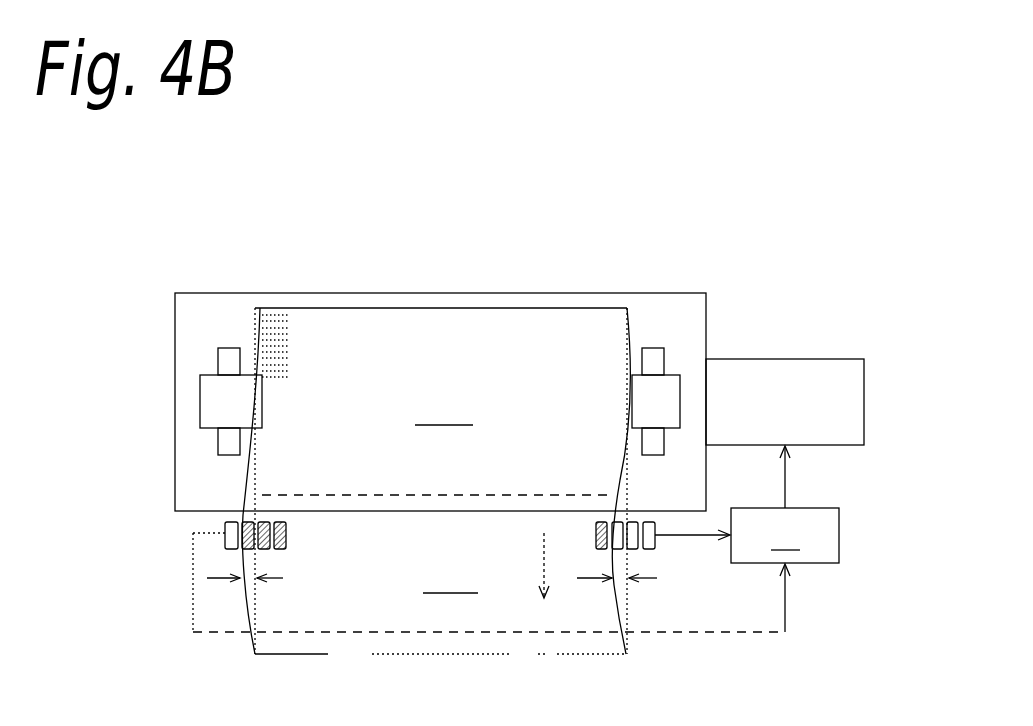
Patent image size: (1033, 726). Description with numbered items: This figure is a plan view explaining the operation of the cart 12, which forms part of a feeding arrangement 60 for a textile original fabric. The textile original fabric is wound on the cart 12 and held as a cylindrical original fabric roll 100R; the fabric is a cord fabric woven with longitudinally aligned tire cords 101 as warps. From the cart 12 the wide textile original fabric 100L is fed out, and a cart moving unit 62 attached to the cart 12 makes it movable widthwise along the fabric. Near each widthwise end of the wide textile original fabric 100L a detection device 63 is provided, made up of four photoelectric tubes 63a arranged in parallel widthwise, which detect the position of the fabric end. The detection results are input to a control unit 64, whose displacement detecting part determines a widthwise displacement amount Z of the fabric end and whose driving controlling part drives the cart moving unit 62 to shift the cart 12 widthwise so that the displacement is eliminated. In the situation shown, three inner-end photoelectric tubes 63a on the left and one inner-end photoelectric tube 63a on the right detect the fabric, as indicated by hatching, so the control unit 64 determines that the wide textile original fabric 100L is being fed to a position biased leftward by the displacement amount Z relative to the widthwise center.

The roller unit 60 is at (473, 470).
The cart 12 is at (176, 434).
The cylindrical original fabric roll 100R is at (444, 411).
The wide textile original fabric 100L is at (489, 582).
The tire cords 101 is at (290, 350).
The detection device 63 is at (455, 572).
The photoelectric tubes 63a is at (287, 535).
The cart moving unit 62 is at (778, 359).
The control unit 64 is at (785, 535).